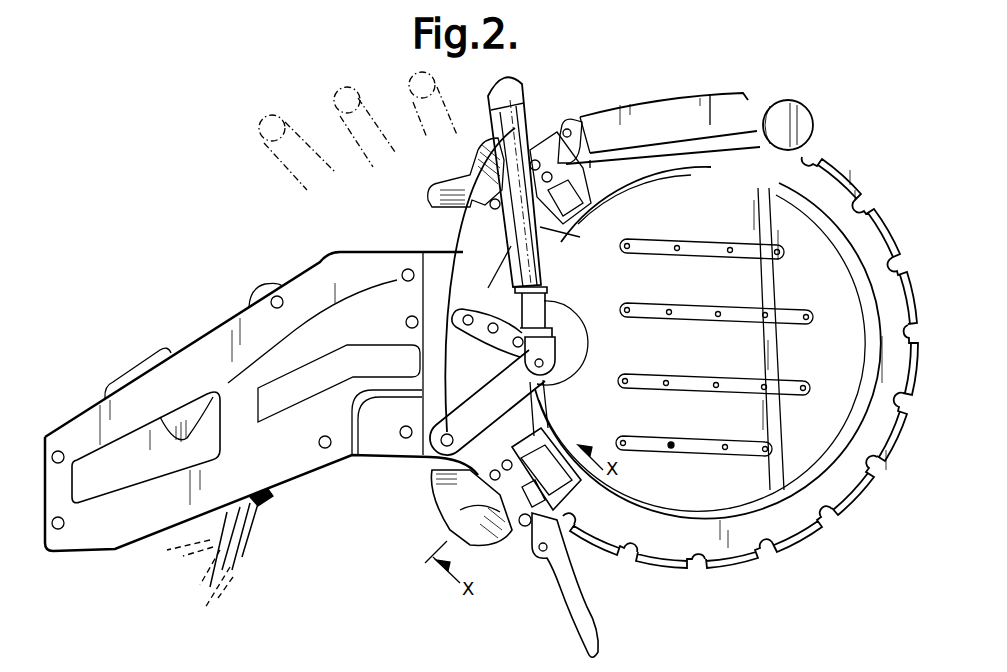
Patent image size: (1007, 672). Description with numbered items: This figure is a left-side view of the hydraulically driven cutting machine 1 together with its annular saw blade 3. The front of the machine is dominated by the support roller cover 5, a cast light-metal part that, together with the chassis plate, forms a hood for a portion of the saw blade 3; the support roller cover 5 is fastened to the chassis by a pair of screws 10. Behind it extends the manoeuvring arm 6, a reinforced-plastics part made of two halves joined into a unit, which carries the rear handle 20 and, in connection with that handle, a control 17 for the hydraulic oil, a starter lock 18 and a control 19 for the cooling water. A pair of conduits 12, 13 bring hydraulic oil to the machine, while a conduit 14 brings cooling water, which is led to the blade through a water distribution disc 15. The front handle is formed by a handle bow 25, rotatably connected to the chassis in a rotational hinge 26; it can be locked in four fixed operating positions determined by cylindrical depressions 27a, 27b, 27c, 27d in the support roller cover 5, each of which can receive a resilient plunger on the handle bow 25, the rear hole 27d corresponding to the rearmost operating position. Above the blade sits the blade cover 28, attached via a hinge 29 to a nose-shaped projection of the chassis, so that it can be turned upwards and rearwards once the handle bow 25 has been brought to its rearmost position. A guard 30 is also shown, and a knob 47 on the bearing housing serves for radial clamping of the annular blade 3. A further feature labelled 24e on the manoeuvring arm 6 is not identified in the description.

The cutting machine 1 is at (297, 244).
The annular saw blade 3 is at (843, 220).
The support roller cover 5 is at (480, 235).
The manoeuvring arm 6 is at (340, 251).
The screws 10 is at (490, 206).
The conduit for hydraulic oil 12 is at (242, 538).
The conduit for hydraulic oil 13 is at (205, 555).
The conduit for cooling water 14 is at (268, 500).
The water distribution disc 15 is at (808, 443).
The control for hydraulic oil 17 is at (182, 430).
The starter lock 18 is at (128, 374).
The control for cooling water 19 is at (265, 283).
The rear handle 20 is at (192, 368).
The mounting hole 24e is at (405, 321).
The handle bow 25 is at (517, 113).
The rotational hinge 26 is at (440, 447).
The cylindrical depression 27a is at (546, 370).
The cylindrical depression 27b is at (524, 342).
The cylindrical depression 27c is at (490, 333).
The cylindrical depression 27d is at (463, 323).
The blade cover 28 is at (737, 108).
The hinge 29 is at (568, 124).
The guard 30 is at (593, 625).
The knob 47 is at (450, 197).